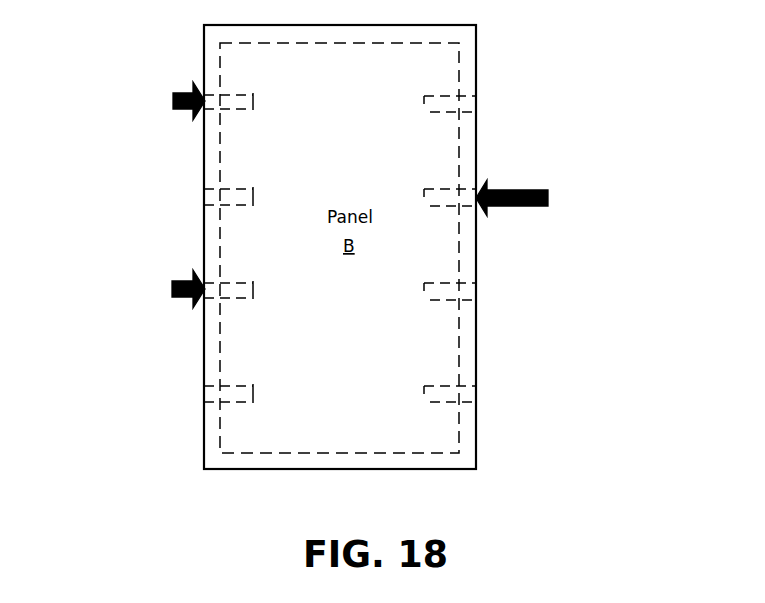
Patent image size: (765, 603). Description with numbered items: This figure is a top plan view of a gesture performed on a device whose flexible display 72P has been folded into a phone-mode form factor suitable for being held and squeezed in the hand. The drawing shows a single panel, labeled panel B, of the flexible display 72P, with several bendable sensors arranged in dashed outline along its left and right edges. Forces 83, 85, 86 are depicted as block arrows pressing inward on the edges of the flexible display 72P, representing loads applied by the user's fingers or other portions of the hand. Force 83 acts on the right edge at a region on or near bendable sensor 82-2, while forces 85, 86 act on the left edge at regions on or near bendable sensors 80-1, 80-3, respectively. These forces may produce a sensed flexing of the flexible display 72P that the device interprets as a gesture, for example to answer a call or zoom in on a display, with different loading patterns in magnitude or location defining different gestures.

The flexible display 72P is at (126, 370).
The bendable sensor 80-1 is at (222, 92).
The bendable sensor 80-3 is at (227, 282).
The bendable sensor 82-2 is at (450, 189).
The force 83 is at (548, 198).
The force 85 is at (173, 107).
The force 86 is at (172, 292).